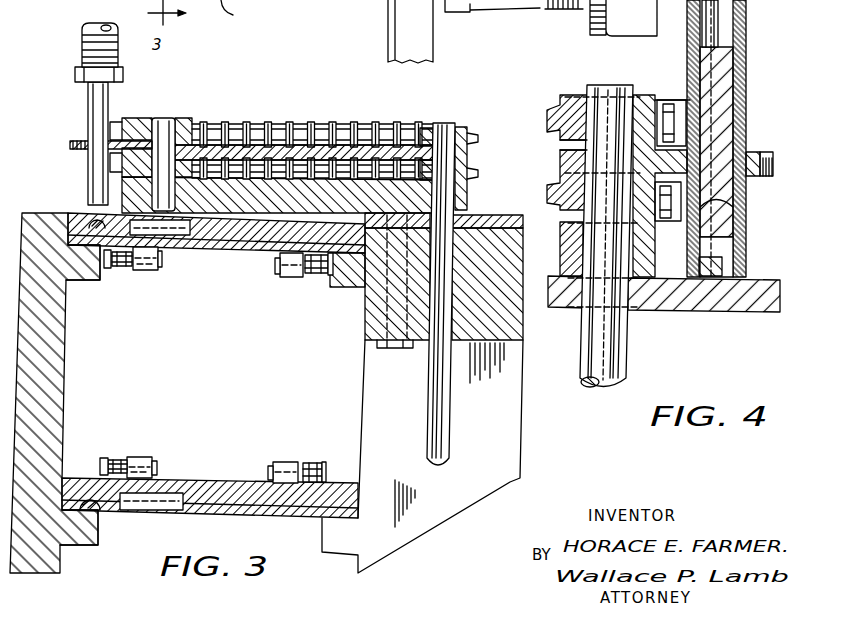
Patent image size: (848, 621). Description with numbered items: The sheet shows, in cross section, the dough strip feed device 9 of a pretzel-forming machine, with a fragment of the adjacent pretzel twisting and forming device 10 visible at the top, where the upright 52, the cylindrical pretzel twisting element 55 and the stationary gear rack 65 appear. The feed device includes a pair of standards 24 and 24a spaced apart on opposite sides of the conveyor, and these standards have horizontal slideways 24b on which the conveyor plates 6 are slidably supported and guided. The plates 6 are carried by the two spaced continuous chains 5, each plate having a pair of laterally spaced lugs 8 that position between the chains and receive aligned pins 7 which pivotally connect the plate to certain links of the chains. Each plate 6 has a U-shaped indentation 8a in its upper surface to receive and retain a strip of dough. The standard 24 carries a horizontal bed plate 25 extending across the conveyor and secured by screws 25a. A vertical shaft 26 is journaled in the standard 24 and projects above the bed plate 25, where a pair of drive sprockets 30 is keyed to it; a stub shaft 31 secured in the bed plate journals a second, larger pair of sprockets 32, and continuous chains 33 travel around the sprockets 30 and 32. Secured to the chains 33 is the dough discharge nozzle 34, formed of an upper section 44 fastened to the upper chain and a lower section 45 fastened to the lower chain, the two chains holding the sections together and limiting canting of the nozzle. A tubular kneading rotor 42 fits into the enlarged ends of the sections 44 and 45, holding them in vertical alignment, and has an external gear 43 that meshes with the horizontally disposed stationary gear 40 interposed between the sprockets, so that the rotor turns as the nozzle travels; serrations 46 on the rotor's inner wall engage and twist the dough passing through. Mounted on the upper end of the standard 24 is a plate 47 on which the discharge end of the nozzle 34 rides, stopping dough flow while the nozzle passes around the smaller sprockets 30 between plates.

In FIG. 3, the continuous chains 5 is at (119, 270).
In FIG. 3, the supporting plates 6 is at (227, 250).
In FIG. 3, the pins 7 is at (139, 268).
In FIG. 3, the lugs 8 is at (150, 268).
In FIG. 3, the U-shaped indentation 8a is at (100, 228).
In FIG. 3, the dough strip feed device 9 is at (247, 30).
In FIG. 3, the pretzel twisting and forming device 10 is at (508, 24).
In FIG. 3, the standard 24 is at (515, 433).
In FIG. 3, the standard 24a is at (104, 385).
In FIG. 3, the horizontal slideways 24b is at (100, 283).
In FIG. 3, the bed plate 25 is at (122, 190).
In FIG. 4, the bed plate 25 is at (650, 290).
In FIG. 3, the screws 25a is at (380, 327).
In FIG. 3, the shaft 26 is at (444, 383).
In FIG. 4, the shaft 26 is at (627, 360).
In FIG. 3, the drive sprockets 30 is at (467, 132).
In FIG. 4, the drive sprockets 30 is at (573, 110).
In FIG. 3, the stub shaft 31 is at (163, 116).
In FIG. 3, the driven sprockets 32 is at (198, 121).
In FIG. 3, the continuous chains 33 is at (290, 124).
In FIG. 4, the continuous chains 33 is at (666, 100).
In FIG. 3, the dough discharge nozzle 34 is at (90, 110).
In FIG. 4, the dough discharge nozzle 34 is at (746, 15).
In FIG. 3, the stationary gear 40 is at (360, 150).
In FIG. 4, the stationary gear 40 is at (596, 146).
In FIG. 4, the rotor 42 is at (744, 101).
In FIG. 4, the external gear 43 is at (757, 152).
In FIG. 4, the upper nozzle section 44 is at (746, 68).
In FIG. 4, the lower nozzle section 45 is at (737, 245).
In FIG. 4, the serrations 46 is at (735, 218).
In FIG. 3, the plate 47 is at (502, 215).
In FIG. 4, the plate 47 is at (742, 310).
In FIG. 3, the upright 52 is at (387, 21).
In FIG. 3, the pretzel twisting element 55 is at (465, 10).
In FIG. 3, the stationary gear rack 65 is at (591, 15).